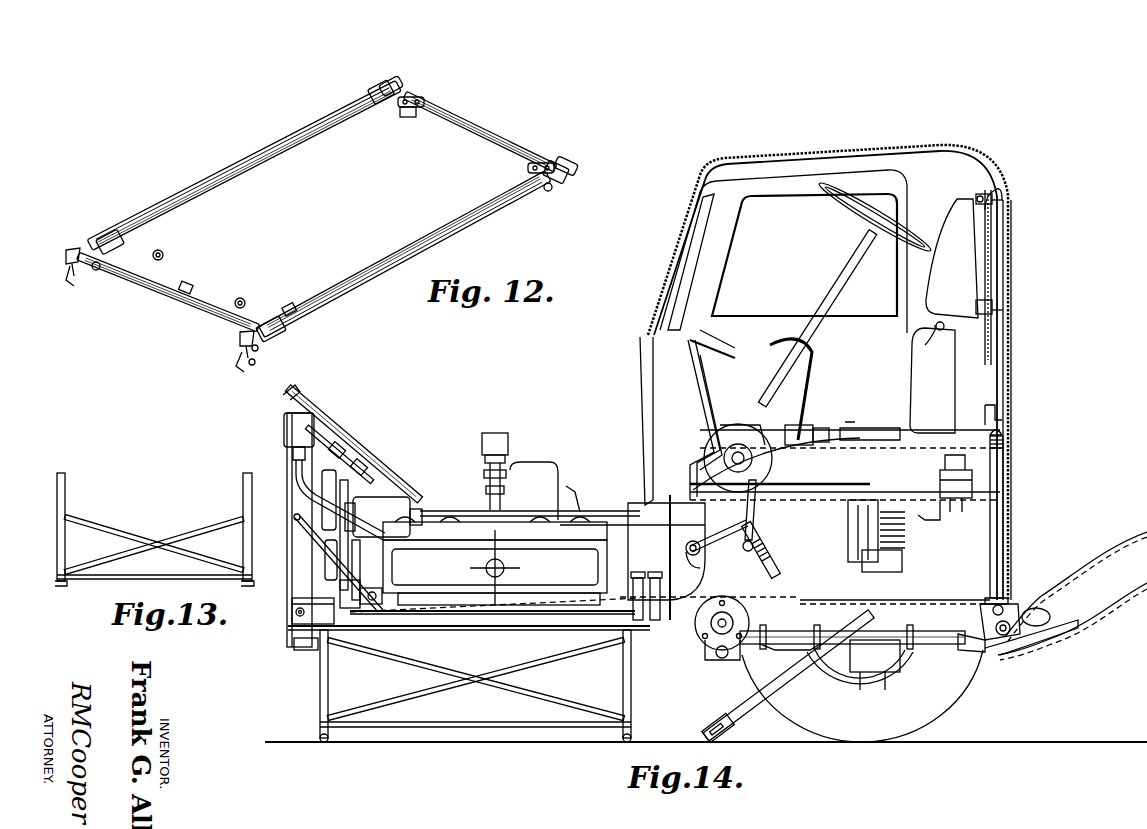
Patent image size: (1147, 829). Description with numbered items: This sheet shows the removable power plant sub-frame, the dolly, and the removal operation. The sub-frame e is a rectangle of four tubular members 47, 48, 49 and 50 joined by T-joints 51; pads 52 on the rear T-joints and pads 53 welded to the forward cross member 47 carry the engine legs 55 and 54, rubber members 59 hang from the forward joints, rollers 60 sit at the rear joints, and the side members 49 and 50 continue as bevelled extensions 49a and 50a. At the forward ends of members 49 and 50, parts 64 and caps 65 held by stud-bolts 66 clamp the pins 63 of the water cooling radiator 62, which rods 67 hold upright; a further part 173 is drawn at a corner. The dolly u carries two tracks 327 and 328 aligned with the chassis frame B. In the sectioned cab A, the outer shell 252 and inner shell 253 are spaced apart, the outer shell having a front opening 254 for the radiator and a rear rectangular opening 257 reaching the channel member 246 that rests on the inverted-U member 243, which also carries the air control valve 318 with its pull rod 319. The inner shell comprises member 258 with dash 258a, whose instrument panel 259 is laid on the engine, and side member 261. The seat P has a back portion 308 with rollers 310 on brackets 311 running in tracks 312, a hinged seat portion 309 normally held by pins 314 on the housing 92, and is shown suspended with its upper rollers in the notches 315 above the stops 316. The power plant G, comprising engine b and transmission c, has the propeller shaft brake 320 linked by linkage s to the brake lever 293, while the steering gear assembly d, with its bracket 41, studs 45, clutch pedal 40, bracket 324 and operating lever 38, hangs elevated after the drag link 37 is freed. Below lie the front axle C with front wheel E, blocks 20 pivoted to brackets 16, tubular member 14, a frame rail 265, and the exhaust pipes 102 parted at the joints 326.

In FIG. 12, the forward cross member 47 is at (203, 279).
In FIG. 12, the tubular member 48 is at (478, 138).
In FIG. 12, the side member 49 is at (430, 238).
In FIG. 12, the side member 50 is at (255, 165).
In FIG. 12, the extension 49a is at (578, 160).
In FIG. 12, the extension 50a is at (410, 78).
In FIG. 12, the T-joint 51 is at (372, 82).
In FIG. 12, the pad 52 is at (425, 98).
In FIG. 12, the pad 53 is at (162, 252).
In FIG. 12, the rubber member 59 is at (100, 270).
In FIG. 14, the rubber member 59 is at (306, 650).
In FIG. 12, the roller 60 is at (400, 112).
In FIG. 14, the roller 60 is at (645, 625).
In FIG. 12, the part 64 is at (76, 246).
In FIG. 12, the stud-bolt 66 is at (72, 280).
In FIG. 12, the link 173 is at (262, 348).
In FIG. 12, the frame e is at (360, 268).
In FIG. 14, the frame e is at (468, 620).
In FIG. 13, the dolly u is at (212, 522).
In FIG. 14, the dolly u is at (508, 722).
In FIG. 13, the track 327 is at (66, 474).
In FIG. 13, the track 328 is at (243, 474).
In FIG. 14, the track 328 is at (795, 425).
In FIG. 14, the outer shell 252 is at (860, 150).
In FIG. 14, the inner shell 253 is at (760, 172).
In FIG. 14, the bracket 311 is at (996, 170).
In FIG. 14, the notch 315 is at (992, 196).
In FIG. 14, the back portion 308 is at (960, 200).
In FIG. 14, the roller 310 is at (1004, 192).
In FIG. 14, the track 312 is at (994, 268).
In FIG. 14, the stop 316 is at (978, 300).
In FIG. 14, the seat P is at (934, 326).
In FIG. 14, the cab A is at (1012, 328).
In FIG. 14, the clutch operating pedal 40 is at (798, 325).
In FIG. 14, the member 258 is at (700, 336).
In FIG. 14, the opening 254 is at (650, 378).
In FIG. 14, the member 261 is at (690, 455).
In FIG. 14, the dash 258a is at (712, 390).
In FIG. 14, the bracket 324 is at (788, 392).
In FIG. 14, the seat portion 309 is at (920, 372).
In FIG. 14, the pin 314 is at (850, 424).
In FIG. 14, the housing 92 is at (908, 442).
In FIG. 14, the frame rail 265 is at (866, 496).
In FIG. 14, the operating lever 38 is at (780, 486).
In FIG. 14, the channel member 246 is at (1005, 418).
In FIG. 14, the rectangular opening 257 is at (1005, 450).
In FIG. 14, the member 243 is at (1005, 475).
In FIG. 14, the control valve 318 is at (952, 515).
In FIG. 14, the pull rod 319 is at (922, 518).
In FIG. 14, the steering gear assembly d is at (724, 450).
In FIG. 14, the transmission c is at (795, 518).
In FIG. 14, the stud 45 is at (700, 560).
In FIG. 14, the bracket 41 is at (705, 584).
In FIG. 14, the leg 55 is at (680, 580).
In FIG. 14, the propeller shaft brake 320 is at (850, 556).
In FIG. 14, the power plant G is at (628, 500).
In FIG. 14, the front wheel E is at (952, 708).
In FIG. 14, the block 20 is at (712, 645).
In FIG. 14, the bracket 16 is at (700, 636).
In FIG. 14, the drag link 37 is at (785, 680).
In FIG. 14, the front axle C is at (858, 688).
In FIG. 14, the joint 326 is at (968, 652).
In FIG. 14, the tubular member 14 is at (998, 640).
In FIG. 14, the exhaust pipe 102 is at (1030, 650).
In FIG. 14, the chassis frame B is at (1112, 600).
In FIG. 14, the engine b is at (556, 456).
In FIG. 14, the linkage s is at (566, 504).
In FIG. 14, the brake lever 293 is at (378, 448).
In FIG. 14, the instrument panel 259 is at (340, 445).
In FIG. 14, the water cooling radiator 62 is at (290, 448).
In FIG. 14, the rod 67 is at (296, 522).
In FIG. 14, the leg 54 is at (364, 574).
In FIG. 14, the cap 65 is at (292, 602).
In FIG. 14, the pin 63 is at (292, 616).